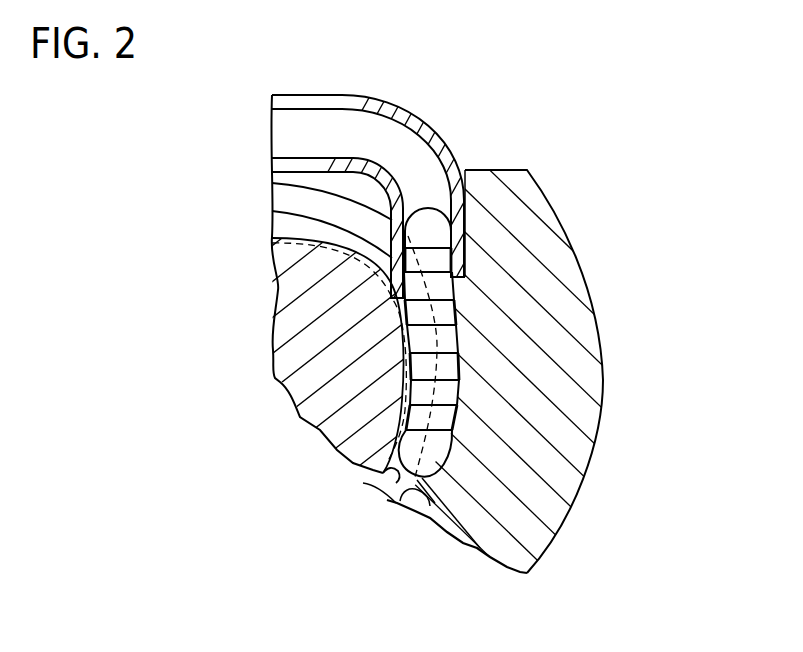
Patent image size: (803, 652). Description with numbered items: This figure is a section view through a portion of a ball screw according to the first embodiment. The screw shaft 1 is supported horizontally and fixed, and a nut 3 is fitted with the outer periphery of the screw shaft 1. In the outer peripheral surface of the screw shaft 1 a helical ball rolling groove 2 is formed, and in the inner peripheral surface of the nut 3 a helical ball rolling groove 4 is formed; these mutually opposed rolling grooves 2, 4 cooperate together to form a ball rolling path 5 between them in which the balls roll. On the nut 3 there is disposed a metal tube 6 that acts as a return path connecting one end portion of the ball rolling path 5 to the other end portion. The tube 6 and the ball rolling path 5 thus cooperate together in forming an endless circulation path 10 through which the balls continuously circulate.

The screw shaft 1 is at (273, 316).
The ball rolling groove 2 is at (381, 481).
The nut 3 is at (592, 312).
The ball rolling groove 4 is at (400, 500).
The ball rolling path 5 is at (426, 514).
The tube 6 is at (417, 114).
The endless circulation path 10 is at (435, 167).